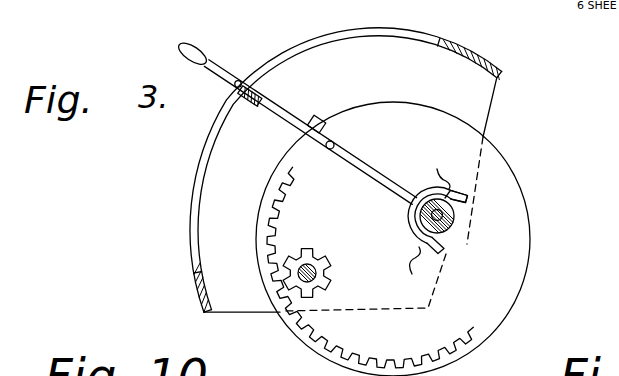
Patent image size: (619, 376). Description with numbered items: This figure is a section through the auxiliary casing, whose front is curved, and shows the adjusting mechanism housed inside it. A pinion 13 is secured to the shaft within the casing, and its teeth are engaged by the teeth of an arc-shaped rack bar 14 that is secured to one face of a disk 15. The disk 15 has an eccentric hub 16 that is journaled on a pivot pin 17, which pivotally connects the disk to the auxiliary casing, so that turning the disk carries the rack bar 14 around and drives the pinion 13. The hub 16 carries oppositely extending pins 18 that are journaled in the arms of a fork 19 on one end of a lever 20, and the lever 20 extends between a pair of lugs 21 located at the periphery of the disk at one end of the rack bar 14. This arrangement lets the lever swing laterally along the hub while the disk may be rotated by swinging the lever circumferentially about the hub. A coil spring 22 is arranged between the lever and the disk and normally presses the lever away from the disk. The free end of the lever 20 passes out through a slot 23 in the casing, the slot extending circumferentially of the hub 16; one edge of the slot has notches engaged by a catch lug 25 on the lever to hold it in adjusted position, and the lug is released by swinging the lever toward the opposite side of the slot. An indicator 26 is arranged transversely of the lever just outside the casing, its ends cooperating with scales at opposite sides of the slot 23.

The pinion 13 is at (320, 273).
The arc-shaped rack bar 14 is at (363, 356).
The disk 15 is at (515, 288).
The eccentric hub 16 is at (444, 230).
The pivot pin 17 is at (453, 216).
The pins 18 is at (426, 219).
The fork 19 is at (467, 198).
The lever 20 is at (377, 179).
The lugs 21 is at (318, 116).
The coil spring 22 is at (336, 143).
The slot 23 is at (422, 37).
The catch lug 25 is at (254, 111).
The indicator 26 is at (242, 79).